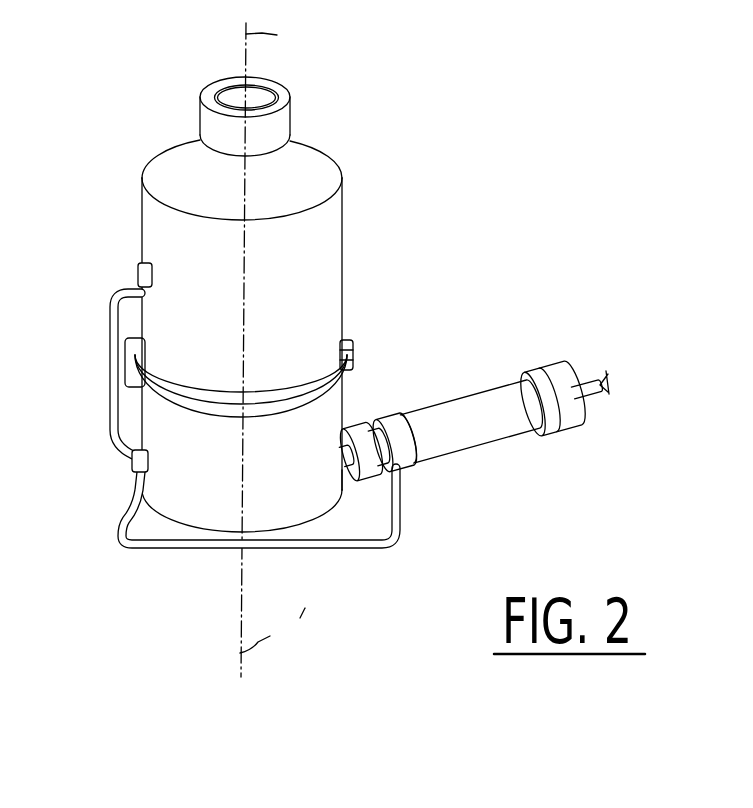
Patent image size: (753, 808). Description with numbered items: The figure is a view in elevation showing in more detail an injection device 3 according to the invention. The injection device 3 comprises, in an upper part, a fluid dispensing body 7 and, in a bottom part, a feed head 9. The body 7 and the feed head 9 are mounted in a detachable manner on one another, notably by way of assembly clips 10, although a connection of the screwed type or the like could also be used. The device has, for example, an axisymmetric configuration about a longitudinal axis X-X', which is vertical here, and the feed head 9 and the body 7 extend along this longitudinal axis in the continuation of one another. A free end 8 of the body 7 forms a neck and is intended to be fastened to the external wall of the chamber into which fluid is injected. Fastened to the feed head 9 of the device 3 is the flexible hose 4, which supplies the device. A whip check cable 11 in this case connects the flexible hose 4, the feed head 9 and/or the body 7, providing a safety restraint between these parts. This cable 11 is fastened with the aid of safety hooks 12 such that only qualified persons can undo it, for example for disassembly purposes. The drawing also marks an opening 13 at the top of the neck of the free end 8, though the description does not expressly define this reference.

The injection device 3 is at (388, 256).
The flexible hose 4 is at (460, 438).
The fluid dispensing body 7 is at (318, 240).
The free end 8 is at (267, 133).
The feed head 9 is at (168, 488).
The assembly clips 10 is at (355, 357).
The whip check cable 11 is at (112, 392).
The safety hooks 12 is at (136, 272).
The outlet opening 13 is at (258, 99).